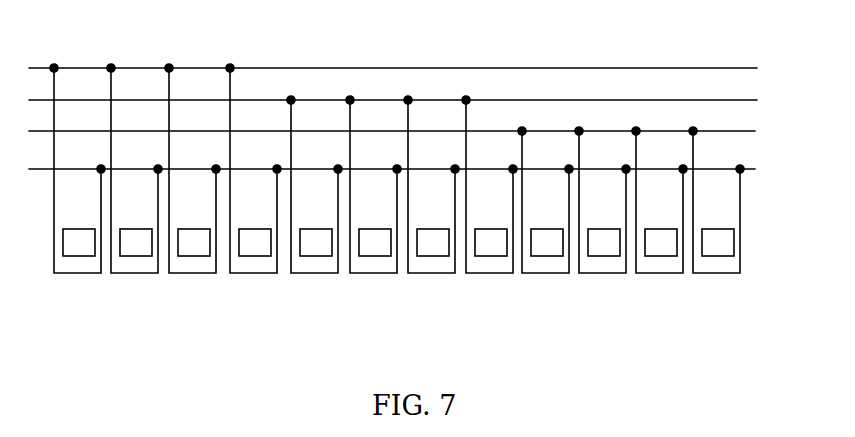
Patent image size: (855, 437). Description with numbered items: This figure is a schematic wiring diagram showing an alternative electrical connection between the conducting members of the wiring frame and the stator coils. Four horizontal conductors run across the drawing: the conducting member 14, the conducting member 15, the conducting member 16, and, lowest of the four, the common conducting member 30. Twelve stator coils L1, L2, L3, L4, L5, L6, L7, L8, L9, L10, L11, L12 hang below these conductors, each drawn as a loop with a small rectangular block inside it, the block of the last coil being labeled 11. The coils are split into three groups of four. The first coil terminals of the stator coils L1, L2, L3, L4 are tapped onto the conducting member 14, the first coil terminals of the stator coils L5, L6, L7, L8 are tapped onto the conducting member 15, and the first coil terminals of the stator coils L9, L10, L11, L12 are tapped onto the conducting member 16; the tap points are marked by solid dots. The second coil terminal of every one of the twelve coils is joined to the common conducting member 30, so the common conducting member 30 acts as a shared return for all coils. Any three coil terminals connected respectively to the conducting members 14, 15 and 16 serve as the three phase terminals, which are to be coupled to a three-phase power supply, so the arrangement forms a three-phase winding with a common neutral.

The conducting member 14 is at (740, 68).
The conducting member 15 is at (740, 100).
The conducting member 16 is at (745, 131).
The common conducting member 30 is at (745, 169).
The light emitting unit 11 is at (734, 240).
The stator coil L1 is at (68, 275).
The stator coil L2 is at (125, 275).
The stator coil L3 is at (183, 275).
The stator coil L4 is at (244, 275).
The stator coil L5 is at (305, 275).
The stator coil L6 is at (364, 275).
The stator coil L7 is at (422, 275).
The stator coil L8 is at (480, 275).
The stator coil L9 is at (536, 275).
The stator coil L10 is at (593, 275).
The stator coil L11 is at (650, 275).
The stator coil L12 is at (707, 275).